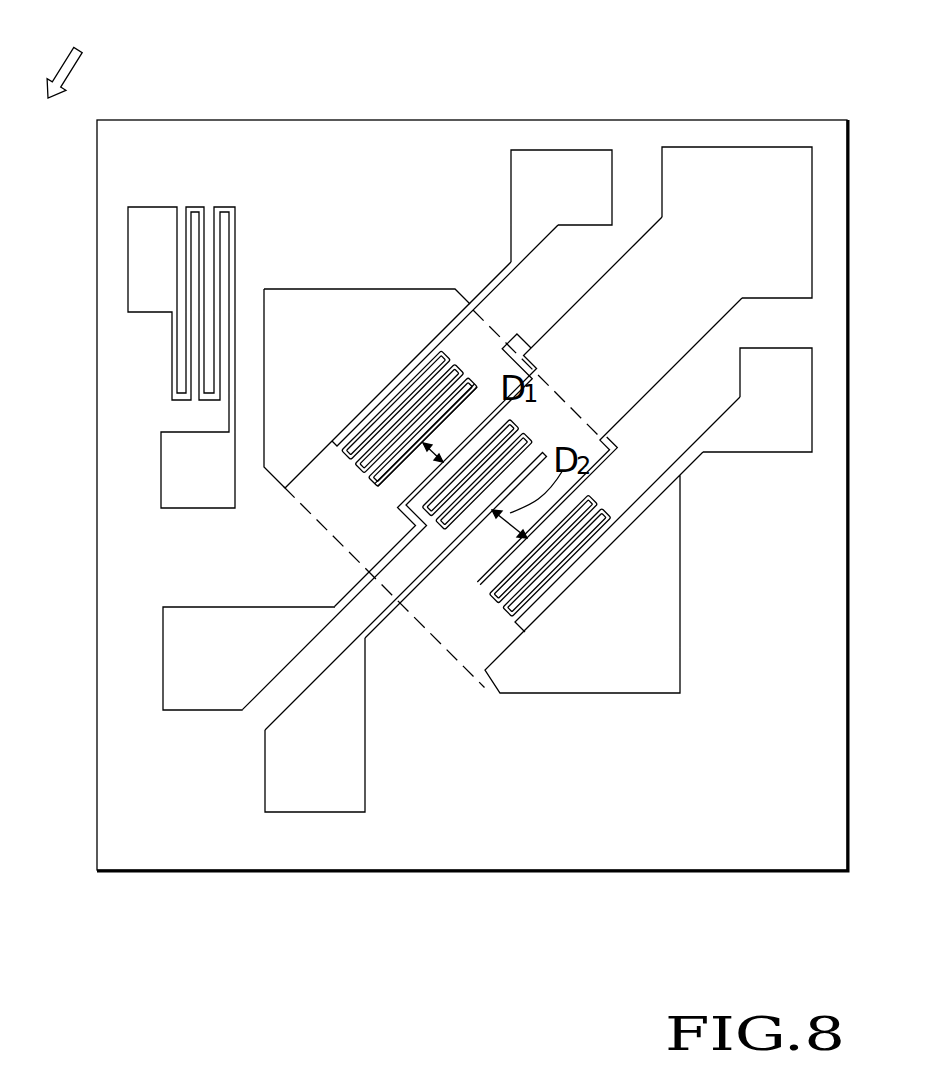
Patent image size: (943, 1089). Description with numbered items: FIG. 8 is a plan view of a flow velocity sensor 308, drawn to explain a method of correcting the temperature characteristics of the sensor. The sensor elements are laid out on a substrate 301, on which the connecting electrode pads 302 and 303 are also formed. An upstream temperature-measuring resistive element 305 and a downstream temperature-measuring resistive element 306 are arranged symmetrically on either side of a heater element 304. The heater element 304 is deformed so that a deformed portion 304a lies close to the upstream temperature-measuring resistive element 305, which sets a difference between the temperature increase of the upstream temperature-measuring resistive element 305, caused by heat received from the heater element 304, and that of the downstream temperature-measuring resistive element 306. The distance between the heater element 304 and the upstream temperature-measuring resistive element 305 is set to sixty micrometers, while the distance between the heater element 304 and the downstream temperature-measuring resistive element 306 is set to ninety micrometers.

The substrate / chip 301 is at (392, 118).
The electrode pad 302 is at (612, 688).
The electrode pad strip 303 is at (438, 585).
The heater element 304 is at (433, 542).
The electrode fingers 304a is at (443, 420).
The upstream temperature-measuring resistive element 305 is at (440, 352).
The downstream temperature-measuring resistive element 306 is at (622, 492).
The surface acoustic wave device 308 is at (82, 51).